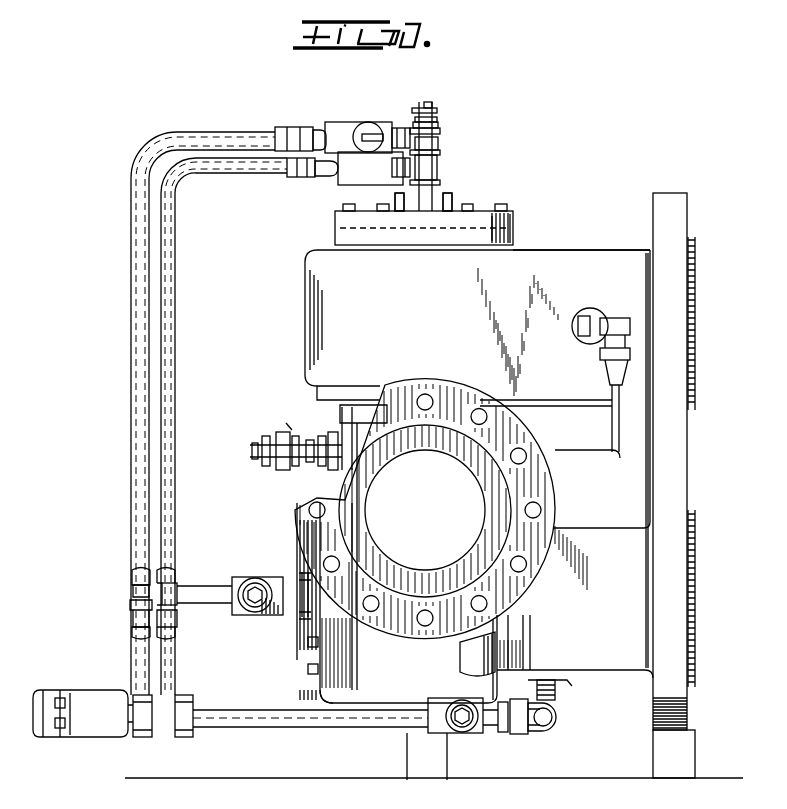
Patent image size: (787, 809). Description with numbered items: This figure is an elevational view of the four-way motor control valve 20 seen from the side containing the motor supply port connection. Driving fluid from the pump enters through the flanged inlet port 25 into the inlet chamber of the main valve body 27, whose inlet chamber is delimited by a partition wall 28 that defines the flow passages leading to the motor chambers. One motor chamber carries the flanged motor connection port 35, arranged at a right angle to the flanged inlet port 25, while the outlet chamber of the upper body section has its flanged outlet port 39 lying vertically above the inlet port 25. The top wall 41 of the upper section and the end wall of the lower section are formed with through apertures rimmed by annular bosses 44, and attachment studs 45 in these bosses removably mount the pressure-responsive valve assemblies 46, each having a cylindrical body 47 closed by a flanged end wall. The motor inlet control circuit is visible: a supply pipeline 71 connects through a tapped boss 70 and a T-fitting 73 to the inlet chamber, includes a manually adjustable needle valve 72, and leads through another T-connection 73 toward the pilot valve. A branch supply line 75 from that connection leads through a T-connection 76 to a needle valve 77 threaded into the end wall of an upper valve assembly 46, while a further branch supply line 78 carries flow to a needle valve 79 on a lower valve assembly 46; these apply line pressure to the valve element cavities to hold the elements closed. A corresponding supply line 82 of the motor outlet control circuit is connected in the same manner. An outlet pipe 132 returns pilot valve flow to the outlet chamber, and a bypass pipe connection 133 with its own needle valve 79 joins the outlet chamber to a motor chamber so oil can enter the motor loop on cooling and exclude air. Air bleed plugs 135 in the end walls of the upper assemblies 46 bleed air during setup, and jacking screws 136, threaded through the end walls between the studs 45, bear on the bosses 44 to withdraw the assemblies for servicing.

The primary fluid control valve 20 is at (600, 186).
The flanged inlet port 25 is at (687, 707).
The main valve body 27 is at (305, 303).
The partition wall 28 is at (503, 668).
The flanged motor connection port 35 is at (455, 385).
The flanged outlet port 39 is at (680, 200).
The top wall 41 is at (583, 250).
The annular boss 44 is at (337, 690).
The attachment stud 45 is at (468, 207).
The pressure-responsive valve assembly 46 is at (508, 219).
The cylindrical body 47 is at (472, 643).
The tapped boss 70 is at (558, 680).
The supply pipeline 71 is at (238, 718).
The needle valve 72 is at (478, 733).
The T-fitting 73 is at (156, 718).
The branch supply line 75 is at (202, 165).
The T-connection 76 is at (170, 580).
The needle valve 77 is at (386, 122).
The branch supply line 78 is at (210, 588).
The needle valve 79 is at (255, 578).
The supply line 82 is at (224, 134).
The outlet pipe 132 is at (619, 448).
The bypass pipe connection 133 is at (285, 436).
The air bleed plug 135 is at (430, 103).
The jacking screw 136 is at (420, 188).